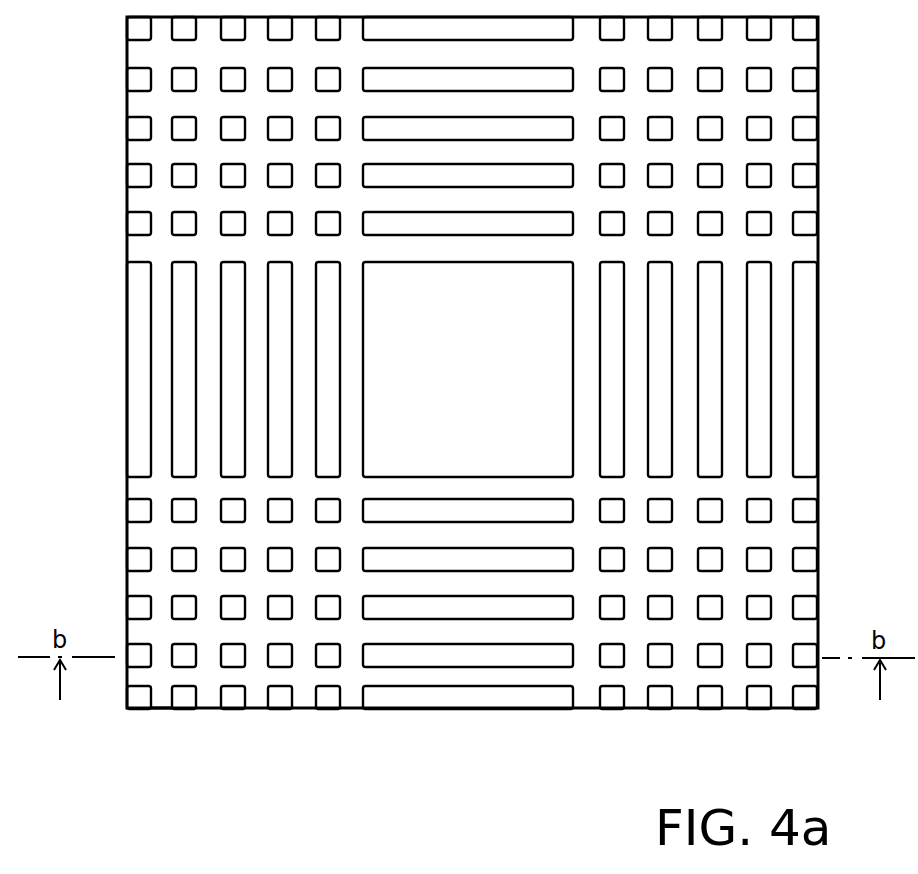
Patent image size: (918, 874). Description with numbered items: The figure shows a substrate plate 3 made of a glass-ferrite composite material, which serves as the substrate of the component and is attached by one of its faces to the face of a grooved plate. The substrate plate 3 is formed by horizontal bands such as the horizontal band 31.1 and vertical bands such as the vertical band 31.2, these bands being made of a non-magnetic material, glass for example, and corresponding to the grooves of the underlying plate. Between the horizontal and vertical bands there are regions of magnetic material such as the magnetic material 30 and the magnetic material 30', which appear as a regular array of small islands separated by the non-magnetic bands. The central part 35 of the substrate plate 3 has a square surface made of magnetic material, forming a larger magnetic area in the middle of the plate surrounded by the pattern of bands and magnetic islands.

The substrate plate 3 is at (468, 716).
The magnetic material 30 is at (111, 722).
The magnetic material 30' is at (217, 722).
The horizontal band 31.1 is at (393, 673).
The vertical band 31.2 is at (163, 688).
The central part 35 is at (530, 393).